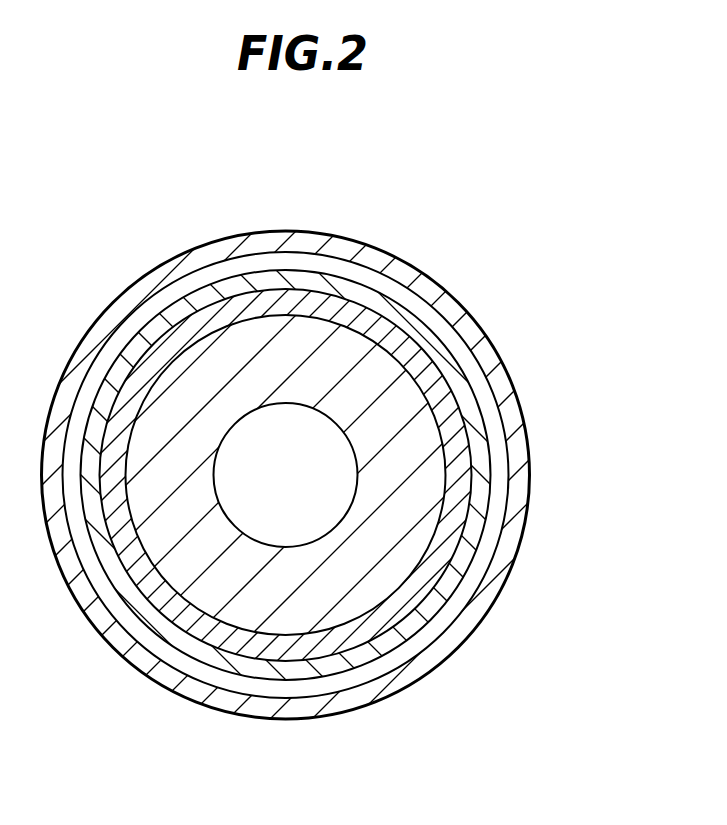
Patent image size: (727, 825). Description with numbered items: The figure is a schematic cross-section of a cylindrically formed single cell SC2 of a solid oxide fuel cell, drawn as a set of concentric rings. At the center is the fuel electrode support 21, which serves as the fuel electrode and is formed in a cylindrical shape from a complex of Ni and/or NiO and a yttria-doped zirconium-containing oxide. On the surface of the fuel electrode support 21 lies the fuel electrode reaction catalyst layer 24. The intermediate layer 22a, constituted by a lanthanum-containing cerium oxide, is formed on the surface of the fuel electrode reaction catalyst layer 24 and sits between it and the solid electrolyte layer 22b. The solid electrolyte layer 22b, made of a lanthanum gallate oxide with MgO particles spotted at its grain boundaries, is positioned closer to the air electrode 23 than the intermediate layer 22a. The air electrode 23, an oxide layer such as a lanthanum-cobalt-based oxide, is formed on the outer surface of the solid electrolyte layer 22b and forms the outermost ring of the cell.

The single cell SC2 is at (542, 190).
The fuel electrode support 21 is at (365, 642).
The intermediate layer 22a is at (477, 512).
The solid electrolyte layer 22b is at (500, 477).
The air electrode 23 is at (507, 400).
The fuel electrode reaction catalyst layer 24 is at (427, 587).